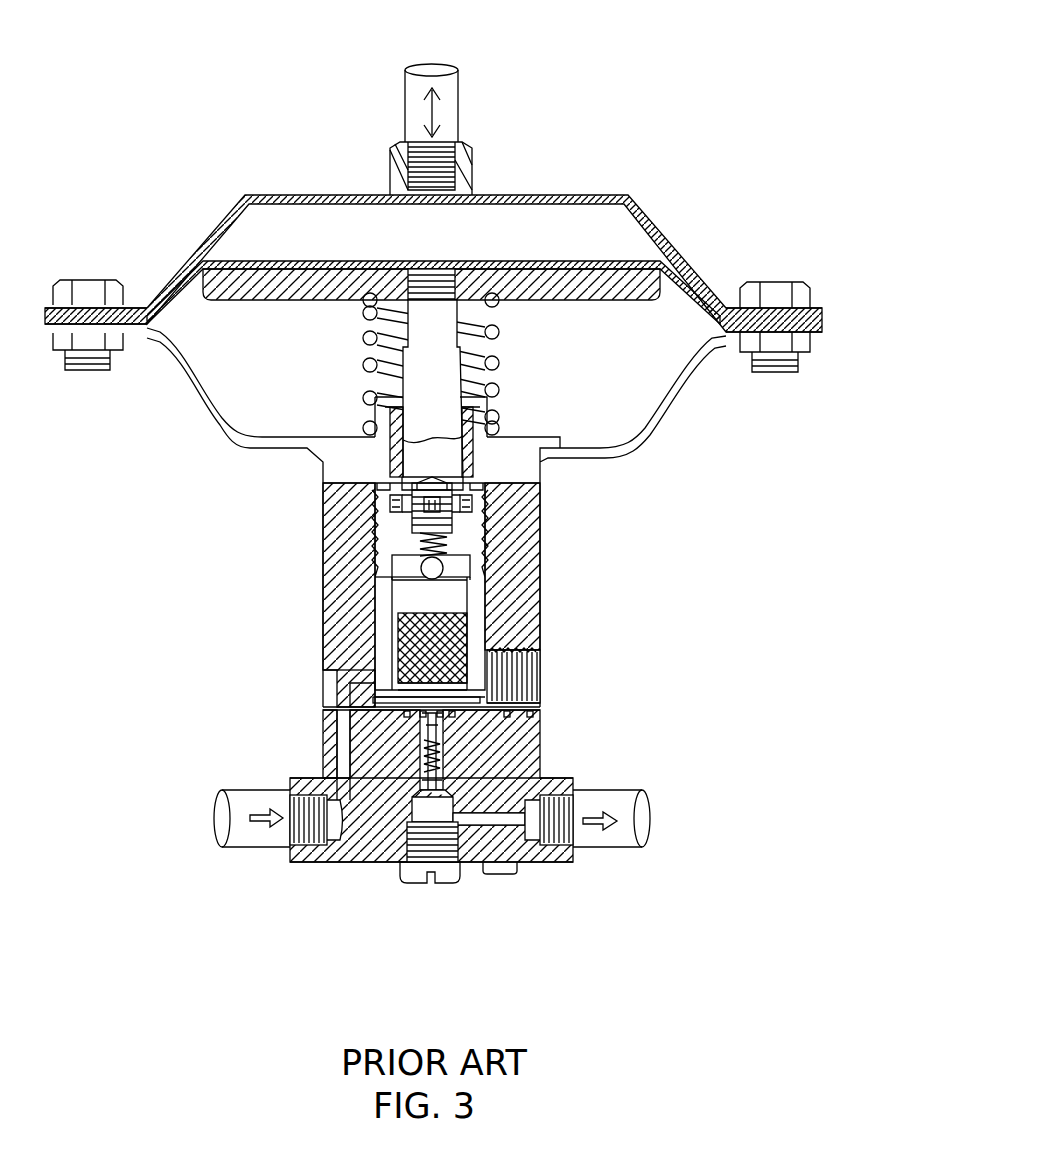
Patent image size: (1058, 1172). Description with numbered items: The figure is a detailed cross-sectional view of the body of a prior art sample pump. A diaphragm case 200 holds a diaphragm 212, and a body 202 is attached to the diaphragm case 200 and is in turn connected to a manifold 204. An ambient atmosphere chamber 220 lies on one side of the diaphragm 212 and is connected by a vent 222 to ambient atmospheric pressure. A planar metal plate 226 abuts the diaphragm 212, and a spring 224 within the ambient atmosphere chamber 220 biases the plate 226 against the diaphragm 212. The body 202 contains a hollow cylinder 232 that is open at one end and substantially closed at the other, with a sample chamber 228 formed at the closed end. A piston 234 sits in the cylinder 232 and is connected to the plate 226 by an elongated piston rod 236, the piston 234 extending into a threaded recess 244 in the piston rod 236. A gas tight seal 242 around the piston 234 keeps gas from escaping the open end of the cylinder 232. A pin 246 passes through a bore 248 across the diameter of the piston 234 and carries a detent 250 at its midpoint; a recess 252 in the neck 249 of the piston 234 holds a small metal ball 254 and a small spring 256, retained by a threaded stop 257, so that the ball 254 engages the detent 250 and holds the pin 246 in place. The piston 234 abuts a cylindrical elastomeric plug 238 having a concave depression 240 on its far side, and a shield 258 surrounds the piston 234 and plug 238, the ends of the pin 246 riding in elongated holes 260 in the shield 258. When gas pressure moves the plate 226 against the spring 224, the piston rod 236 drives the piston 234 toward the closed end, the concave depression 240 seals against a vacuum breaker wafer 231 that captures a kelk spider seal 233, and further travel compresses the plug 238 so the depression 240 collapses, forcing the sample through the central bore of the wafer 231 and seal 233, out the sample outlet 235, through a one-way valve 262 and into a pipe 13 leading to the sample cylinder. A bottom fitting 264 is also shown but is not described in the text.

The pipe 13 is at (628, 842).
The diaphragm case 200 is at (700, 362).
The body 202 is at (540, 566).
The manifold 204 is at (545, 850).
The diaphragm 212 is at (475, 262).
The ambient atmosphere chamber 220 is at (243, 398).
The vent 222 is at (600, 452).
The spring 224 is at (494, 363).
The planar metal plate 226 is at (517, 287).
The sample chamber 228 is at (506, 682).
The vacuum breaker wafer 231 is at (456, 722).
The hollow cylinder 232 is at (387, 667).
The kelk spider seal 233 is at (434, 742).
The piston 234 is at (403, 595).
The sample outlet 235 is at (526, 818).
The piston rod 236 is at (445, 327).
The elastomeric plug 238 is at (450, 650).
The concave depression 240 is at (400, 707).
The gas tight seal 242 is at (489, 443).
The recess 244 is at (472, 497).
The pin 246 is at (388, 578).
The bore 248 is at (471, 578).
The neck 249 is at (453, 532).
The detent 250 is at (444, 574).
The recess 252 is at (450, 548).
The metal ball 254 is at (393, 567).
The small spring 256 is at (420, 548).
The threaded stop 257 is at (417, 522).
The shield 258 is at (420, 685).
The elongated holes 260 is at (486, 628).
The one-way valve 262 is at (430, 735).
The bottom screw 264 is at (545, 860).